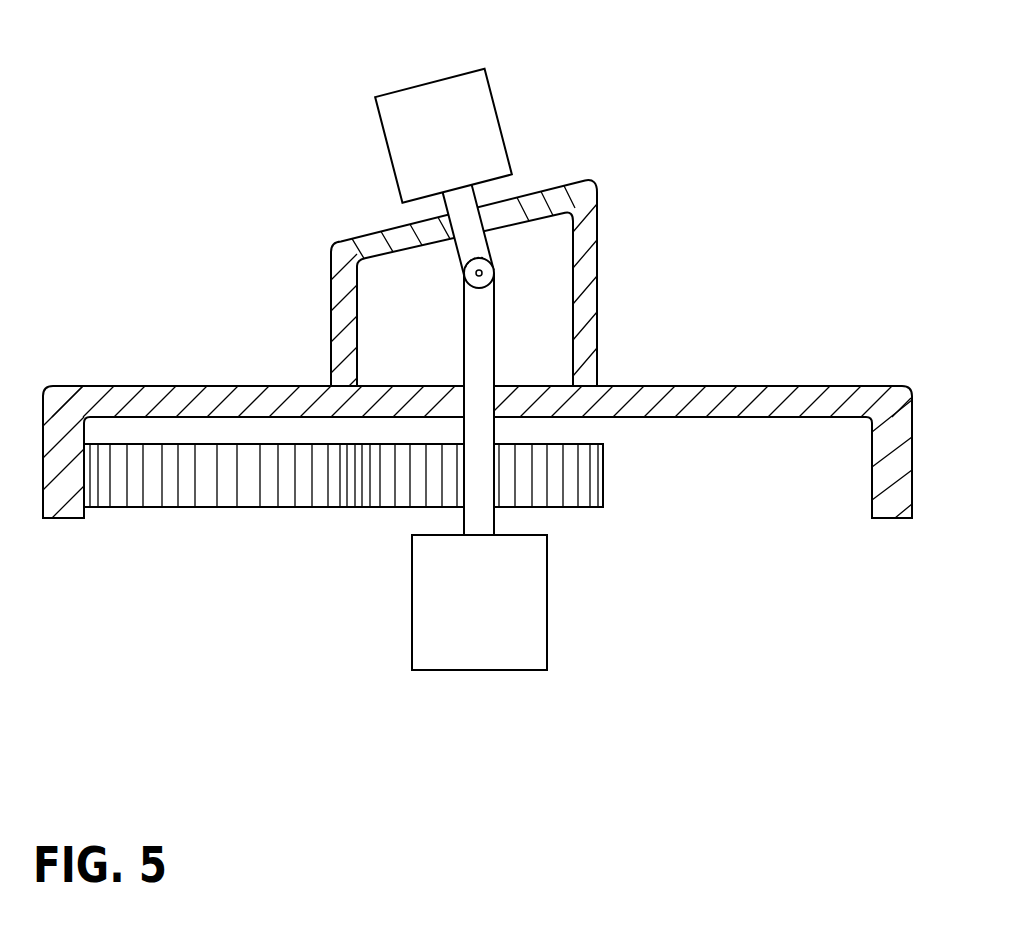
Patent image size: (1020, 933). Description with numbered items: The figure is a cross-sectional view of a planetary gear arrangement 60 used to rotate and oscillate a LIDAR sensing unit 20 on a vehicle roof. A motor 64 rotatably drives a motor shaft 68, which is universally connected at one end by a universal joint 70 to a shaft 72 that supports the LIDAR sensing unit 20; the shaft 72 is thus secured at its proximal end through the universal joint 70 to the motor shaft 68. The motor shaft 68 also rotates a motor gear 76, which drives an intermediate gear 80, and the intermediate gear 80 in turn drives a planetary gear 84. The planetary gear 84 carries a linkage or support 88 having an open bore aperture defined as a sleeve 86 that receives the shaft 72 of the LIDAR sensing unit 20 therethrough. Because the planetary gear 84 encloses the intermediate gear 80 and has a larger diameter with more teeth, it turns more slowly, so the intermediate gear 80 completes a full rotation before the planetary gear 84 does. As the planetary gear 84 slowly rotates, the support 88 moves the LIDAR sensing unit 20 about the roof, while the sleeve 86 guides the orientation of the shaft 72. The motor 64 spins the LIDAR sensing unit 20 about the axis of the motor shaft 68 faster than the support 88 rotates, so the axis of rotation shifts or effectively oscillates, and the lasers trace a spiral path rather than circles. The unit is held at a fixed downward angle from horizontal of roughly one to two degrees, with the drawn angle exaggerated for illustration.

The LIDAR sensing unit 20 is at (492, 95).
The planetary gear arrangement 60 is at (298, 590).
The motor 64 is at (547, 603).
The motor shaft 68 is at (483, 332).
The universal joint 70 is at (493, 270).
The shaft 72 is at (467, 252).
The motor gear 76 is at (595, 478).
The intermediate gear 80 is at (170, 483).
The planetary gear 84 is at (65, 387).
The sleeve 86 is at (470, 220).
The support 88 is at (330, 305).